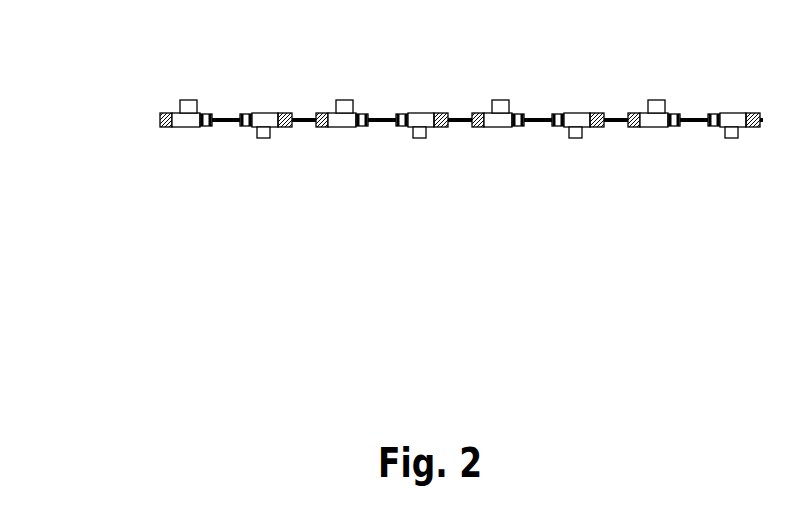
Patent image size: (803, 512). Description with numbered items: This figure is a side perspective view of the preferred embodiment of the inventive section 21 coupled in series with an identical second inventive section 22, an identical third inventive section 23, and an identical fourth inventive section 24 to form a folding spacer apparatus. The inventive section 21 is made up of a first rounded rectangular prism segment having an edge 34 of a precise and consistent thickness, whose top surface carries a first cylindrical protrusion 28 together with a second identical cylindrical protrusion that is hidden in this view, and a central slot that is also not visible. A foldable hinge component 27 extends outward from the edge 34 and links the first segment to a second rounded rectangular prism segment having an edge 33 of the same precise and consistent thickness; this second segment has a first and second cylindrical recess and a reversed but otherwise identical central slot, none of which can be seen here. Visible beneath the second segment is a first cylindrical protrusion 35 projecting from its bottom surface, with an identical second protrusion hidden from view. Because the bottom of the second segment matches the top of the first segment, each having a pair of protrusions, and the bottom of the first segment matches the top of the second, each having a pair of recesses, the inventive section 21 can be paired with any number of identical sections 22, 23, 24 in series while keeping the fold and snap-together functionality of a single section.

The inventive section 21 is at (150, 82).
The second inventive section 22 is at (307, 82).
The third inventive section 23 is at (465, 82).
The fourth inventive section 24 is at (618, 82).
The foldable hinge component 27 is at (225, 126).
The first cylindrical protrusion 28 is at (182, 107).
The edge 33 is at (281, 132).
The edge 34 is at (182, 128).
The first cylindrical protrusion 35 is at (265, 139).